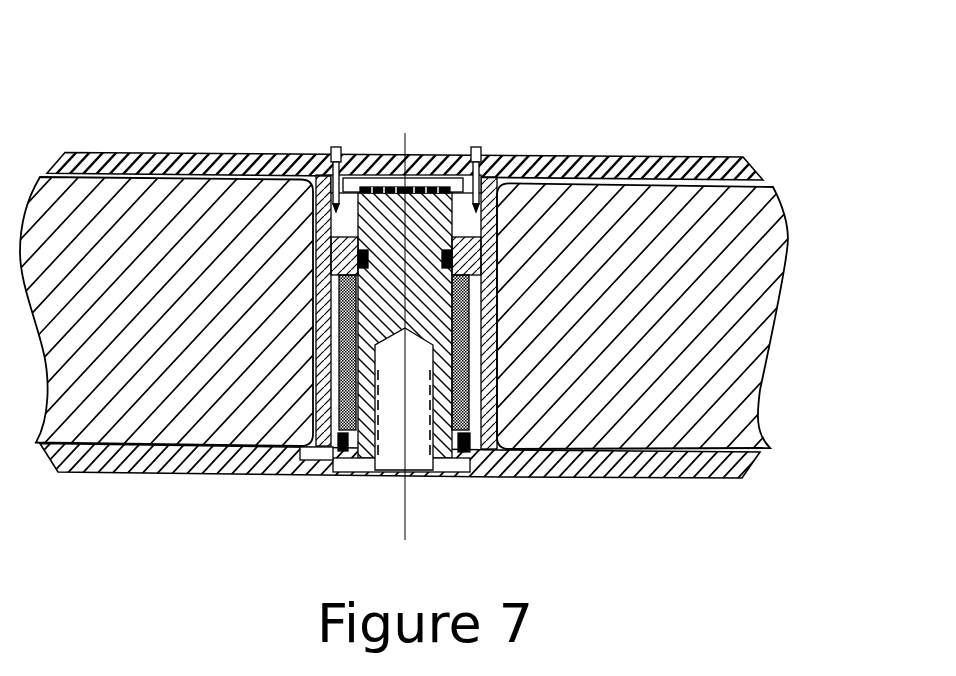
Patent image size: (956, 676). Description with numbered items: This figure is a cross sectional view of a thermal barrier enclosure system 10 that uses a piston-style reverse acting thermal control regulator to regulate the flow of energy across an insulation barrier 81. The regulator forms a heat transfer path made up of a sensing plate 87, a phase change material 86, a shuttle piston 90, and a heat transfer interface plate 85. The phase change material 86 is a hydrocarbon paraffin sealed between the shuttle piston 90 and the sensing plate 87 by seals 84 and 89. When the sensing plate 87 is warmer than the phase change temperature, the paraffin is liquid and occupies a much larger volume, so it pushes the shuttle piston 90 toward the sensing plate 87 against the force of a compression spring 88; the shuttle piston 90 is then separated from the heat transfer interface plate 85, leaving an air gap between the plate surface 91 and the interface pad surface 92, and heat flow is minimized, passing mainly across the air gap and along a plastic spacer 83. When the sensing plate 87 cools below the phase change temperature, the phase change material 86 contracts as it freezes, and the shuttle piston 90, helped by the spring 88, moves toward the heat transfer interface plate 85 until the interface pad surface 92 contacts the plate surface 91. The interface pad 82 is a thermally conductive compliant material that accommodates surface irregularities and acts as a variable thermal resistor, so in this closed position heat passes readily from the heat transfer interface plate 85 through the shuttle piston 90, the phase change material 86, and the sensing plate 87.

The thermal barrier enclosure system 10 is at (820, 363).
The insulation barrier 81 is at (767, 277).
The interface pad 82 is at (438, 185).
The plastic spacer 83 is at (512, 156).
The seal 84 is at (493, 178).
The heat transfer interface plate 85 is at (742, 155).
The phase change material 86 is at (310, 343).
The sensing plate 87 is at (305, 458).
The compression spring 88 is at (445, 474).
The seal 89 is at (470, 452).
The shuttle piston 90 is at (430, 287).
The heat transfer interface plate surface 91 is at (392, 185).
The interface pad surface 92 is at (352, 153).